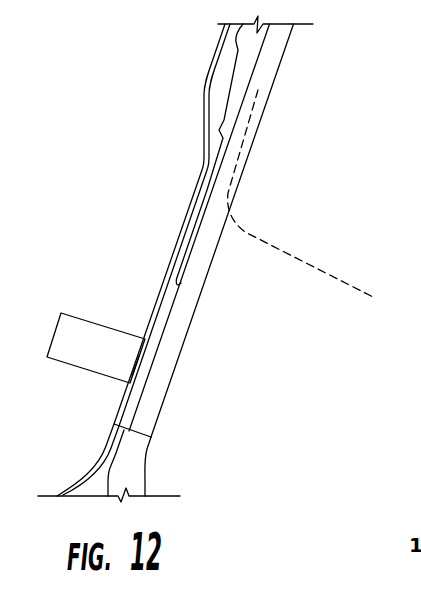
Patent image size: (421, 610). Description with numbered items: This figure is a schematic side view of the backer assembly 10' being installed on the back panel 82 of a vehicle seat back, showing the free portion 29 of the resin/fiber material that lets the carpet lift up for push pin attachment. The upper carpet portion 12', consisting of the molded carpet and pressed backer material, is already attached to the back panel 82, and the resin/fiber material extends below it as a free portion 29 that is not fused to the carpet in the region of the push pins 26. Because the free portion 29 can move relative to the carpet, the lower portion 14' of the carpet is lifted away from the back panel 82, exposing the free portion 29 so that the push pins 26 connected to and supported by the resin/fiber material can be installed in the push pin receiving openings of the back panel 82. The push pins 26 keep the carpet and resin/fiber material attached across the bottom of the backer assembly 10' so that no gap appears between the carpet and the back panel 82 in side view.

The backer assembly 10' is at (270, 226).
The upper carpet portion 12' is at (216, 154).
The lower portion of the carpet 14' is at (206, 263).
The back panel 82 is at (195, 186).
The push pins 26 is at (112, 341).
The free portion 29 is at (139, 364).